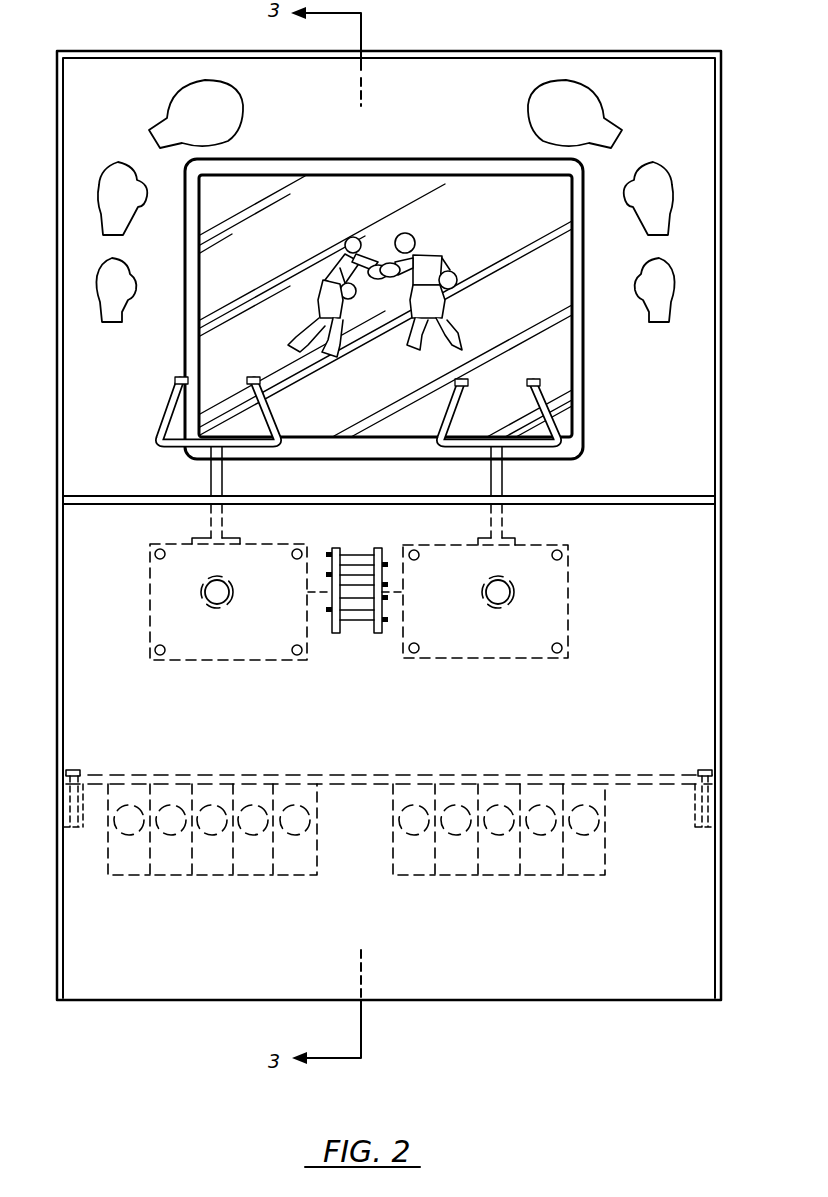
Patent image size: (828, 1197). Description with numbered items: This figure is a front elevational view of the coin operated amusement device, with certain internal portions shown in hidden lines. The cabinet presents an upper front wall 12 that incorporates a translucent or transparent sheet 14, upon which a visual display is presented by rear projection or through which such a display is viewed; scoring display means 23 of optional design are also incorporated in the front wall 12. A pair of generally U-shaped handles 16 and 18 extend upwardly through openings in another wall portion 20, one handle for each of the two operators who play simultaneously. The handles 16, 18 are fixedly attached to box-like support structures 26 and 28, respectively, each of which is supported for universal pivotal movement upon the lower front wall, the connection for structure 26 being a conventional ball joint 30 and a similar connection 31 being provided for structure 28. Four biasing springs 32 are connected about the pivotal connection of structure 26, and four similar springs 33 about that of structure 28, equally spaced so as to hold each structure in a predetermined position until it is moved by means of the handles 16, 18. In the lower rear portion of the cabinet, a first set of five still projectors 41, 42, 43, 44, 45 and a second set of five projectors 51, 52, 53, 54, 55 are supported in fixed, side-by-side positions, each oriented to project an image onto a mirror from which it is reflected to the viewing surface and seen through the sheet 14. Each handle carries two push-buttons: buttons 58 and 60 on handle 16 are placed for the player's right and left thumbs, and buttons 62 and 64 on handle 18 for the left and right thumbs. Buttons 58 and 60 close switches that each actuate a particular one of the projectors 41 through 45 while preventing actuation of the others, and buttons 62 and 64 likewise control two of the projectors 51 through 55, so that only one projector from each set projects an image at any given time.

The upper front wall 12 is at (705, 250).
The translucent or transparent sheet 14 is at (407, 187).
The U-shaped handle 16 is at (278, 430).
The U-shaped handle 18 is at (558, 392).
The wall portion 20 is at (633, 505).
The scoring display means 23 is at (118, 167).
The box-like support structure 26 is at (272, 543).
The box-like support structure 28 is at (445, 545).
The ball joint 30 is at (220, 616).
The connection 31 is at (500, 616).
The biasing springs 32 is at (162, 560).
The biasing springs 33 is at (415, 561).
The still projector 41 is at (128, 876).
The still projector 42 is at (168, 876).
The still projector 43 is at (210, 876).
The still projector 44 is at (252, 876).
The still projector 45 is at (290, 876).
The projector 51 is at (410, 877).
The projector 52 is at (455, 877).
The projector 53 is at (497, 877).
The projector 54 is at (537, 877).
The projector 55 is at (583, 877).
The push-button 58 is at (180, 377).
The push-button 60 is at (252, 377).
The push-button 62 is at (458, 380).
The push-button 64 is at (531, 379).